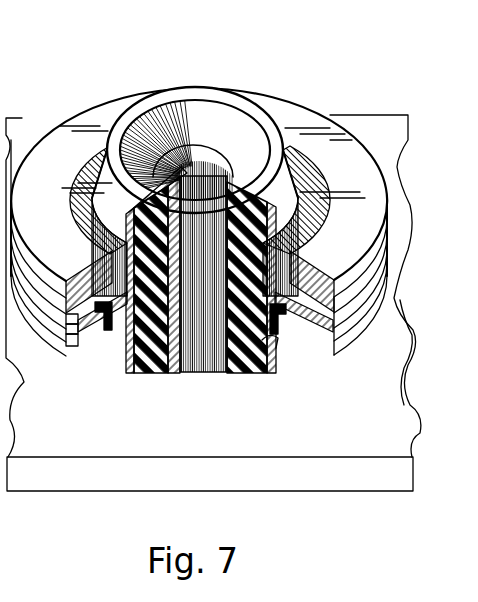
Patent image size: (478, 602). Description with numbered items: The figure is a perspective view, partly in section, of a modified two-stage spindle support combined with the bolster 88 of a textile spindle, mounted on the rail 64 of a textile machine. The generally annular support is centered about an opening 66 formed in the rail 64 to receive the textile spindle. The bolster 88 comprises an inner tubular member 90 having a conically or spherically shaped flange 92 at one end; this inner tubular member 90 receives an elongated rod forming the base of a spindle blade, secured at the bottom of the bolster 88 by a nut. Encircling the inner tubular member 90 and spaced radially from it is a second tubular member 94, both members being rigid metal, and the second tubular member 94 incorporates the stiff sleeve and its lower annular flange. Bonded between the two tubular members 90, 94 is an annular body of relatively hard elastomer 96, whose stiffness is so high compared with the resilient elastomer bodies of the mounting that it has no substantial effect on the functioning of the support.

The rail 64 is at (219, 489).
The opening 66 is at (258, 342).
The bolster 88 is at (250, 90).
The inner tubular member 90 is at (190, 372).
The flange 92 is at (230, 133).
The second tubular member 94 is at (118, 346).
The elastomer 96 is at (134, 200).